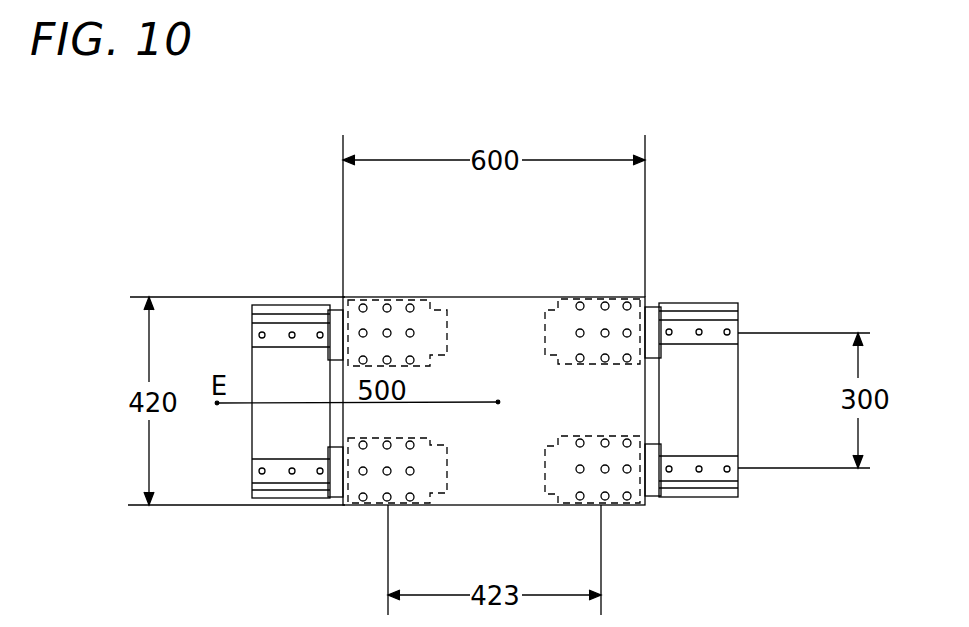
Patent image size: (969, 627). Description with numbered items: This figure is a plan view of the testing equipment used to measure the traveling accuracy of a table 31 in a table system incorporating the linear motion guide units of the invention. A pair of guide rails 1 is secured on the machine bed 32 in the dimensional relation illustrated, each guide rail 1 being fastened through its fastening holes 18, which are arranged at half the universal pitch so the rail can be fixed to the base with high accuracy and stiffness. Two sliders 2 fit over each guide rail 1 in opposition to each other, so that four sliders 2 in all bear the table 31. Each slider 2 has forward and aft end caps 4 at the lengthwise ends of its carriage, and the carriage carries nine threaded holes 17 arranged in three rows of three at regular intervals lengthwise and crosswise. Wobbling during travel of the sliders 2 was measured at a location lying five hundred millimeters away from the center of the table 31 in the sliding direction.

The guide rail 1 is at (277, 330).
The slider 2 is at (373, 322).
The end cap 4 is at (335, 318).
The threaded holes 17 is at (412, 330).
The fastening holes 18 is at (670, 332).
The table 31 is at (498, 330).
The machine bed 32 is at (278, 438).